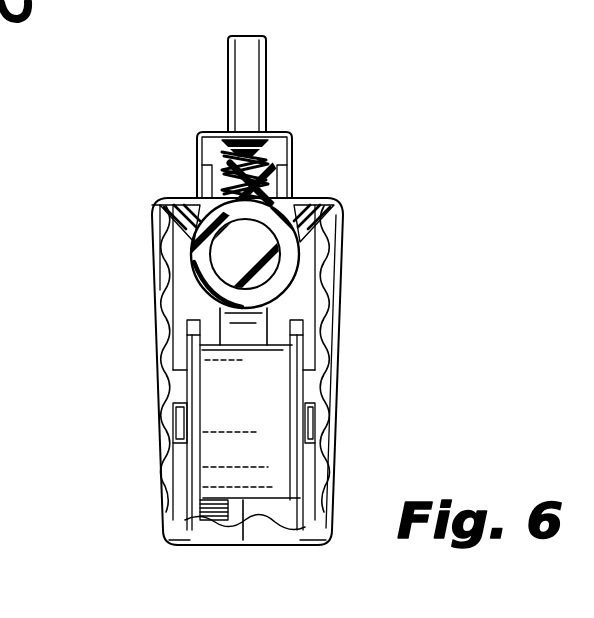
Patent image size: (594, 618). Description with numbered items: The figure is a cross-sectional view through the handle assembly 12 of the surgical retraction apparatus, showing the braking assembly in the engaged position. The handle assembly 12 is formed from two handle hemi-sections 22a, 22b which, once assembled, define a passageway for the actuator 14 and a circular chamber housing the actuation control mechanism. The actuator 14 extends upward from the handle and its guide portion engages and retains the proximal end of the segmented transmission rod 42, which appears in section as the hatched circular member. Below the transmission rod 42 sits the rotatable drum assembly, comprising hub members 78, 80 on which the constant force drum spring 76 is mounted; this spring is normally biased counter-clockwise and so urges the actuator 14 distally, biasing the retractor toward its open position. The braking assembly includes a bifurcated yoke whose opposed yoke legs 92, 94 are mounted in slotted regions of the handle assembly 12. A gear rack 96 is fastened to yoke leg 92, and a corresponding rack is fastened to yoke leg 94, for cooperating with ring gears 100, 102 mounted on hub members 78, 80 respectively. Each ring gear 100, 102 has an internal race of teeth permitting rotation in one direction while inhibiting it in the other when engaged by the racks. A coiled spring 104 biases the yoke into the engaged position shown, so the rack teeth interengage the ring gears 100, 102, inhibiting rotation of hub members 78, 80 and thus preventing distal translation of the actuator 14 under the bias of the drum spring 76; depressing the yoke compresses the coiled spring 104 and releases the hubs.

The handle assembly 12 is at (133, 236).
The actuator 14 is at (245, 72).
The gear rack 96 is at (283, 137).
The coiled spring 104 is at (232, 176).
The transmission rod 42 is at (256, 250).
The yoke leg 92 is at (184, 293).
The yoke leg 94 is at (300, 280).
The ring gear 100 is at (188, 385).
The ring gear 102 is at (302, 388).
The hub member 80 is at (304, 462).
The hub member 78 is at (190, 458).
The constant force drum spring 76 is at (240, 452).
The handle hemi-section 22a is at (186, 540).
The handle hemi-section 22b is at (313, 525).